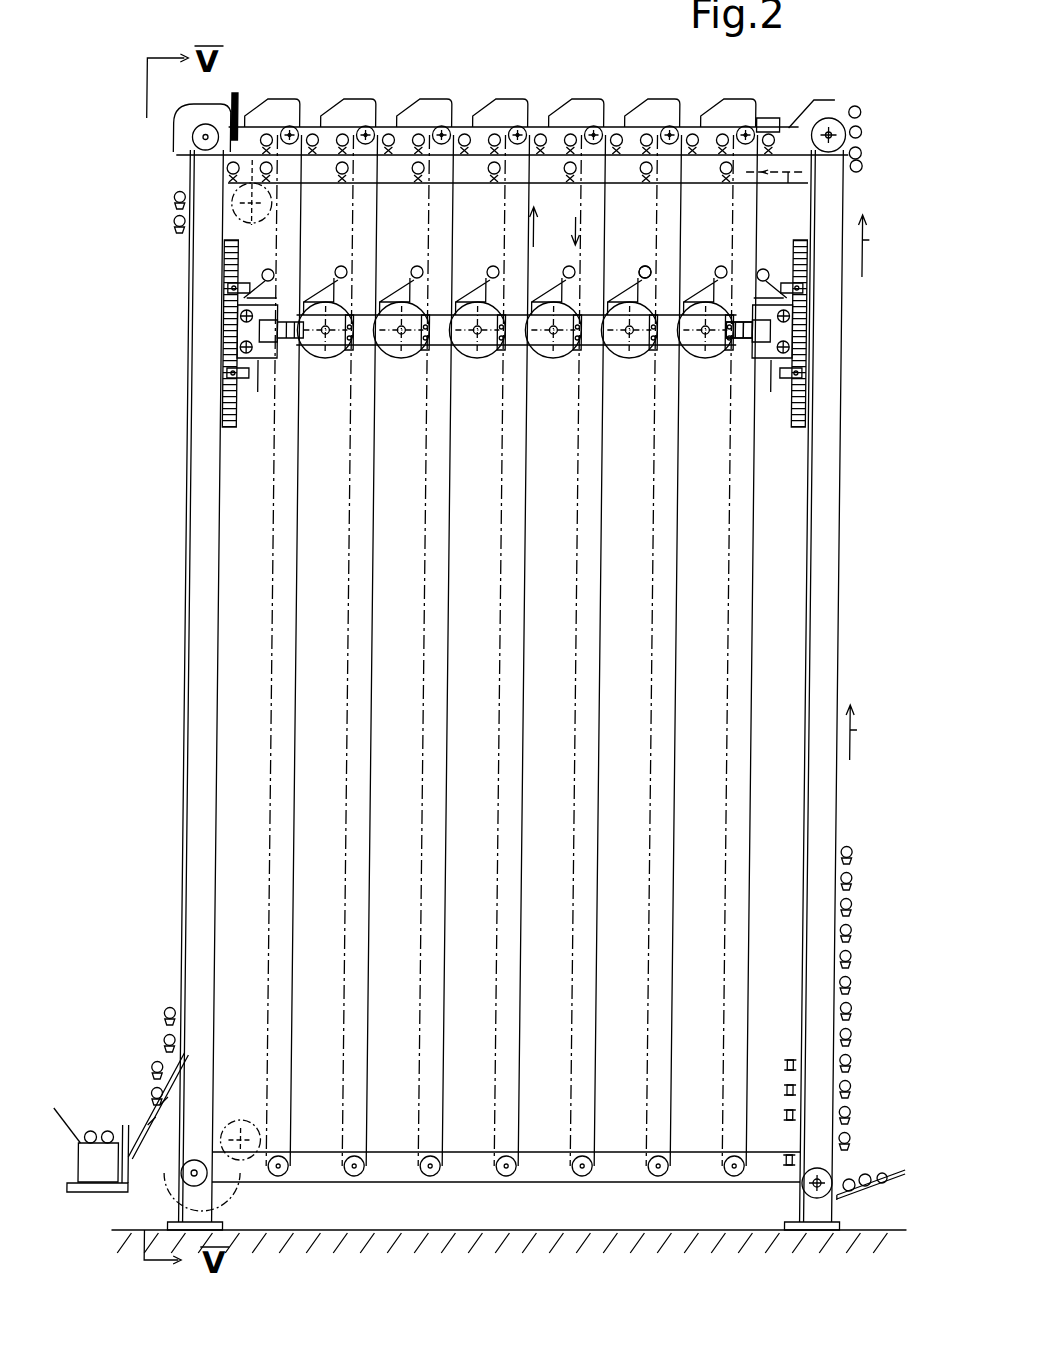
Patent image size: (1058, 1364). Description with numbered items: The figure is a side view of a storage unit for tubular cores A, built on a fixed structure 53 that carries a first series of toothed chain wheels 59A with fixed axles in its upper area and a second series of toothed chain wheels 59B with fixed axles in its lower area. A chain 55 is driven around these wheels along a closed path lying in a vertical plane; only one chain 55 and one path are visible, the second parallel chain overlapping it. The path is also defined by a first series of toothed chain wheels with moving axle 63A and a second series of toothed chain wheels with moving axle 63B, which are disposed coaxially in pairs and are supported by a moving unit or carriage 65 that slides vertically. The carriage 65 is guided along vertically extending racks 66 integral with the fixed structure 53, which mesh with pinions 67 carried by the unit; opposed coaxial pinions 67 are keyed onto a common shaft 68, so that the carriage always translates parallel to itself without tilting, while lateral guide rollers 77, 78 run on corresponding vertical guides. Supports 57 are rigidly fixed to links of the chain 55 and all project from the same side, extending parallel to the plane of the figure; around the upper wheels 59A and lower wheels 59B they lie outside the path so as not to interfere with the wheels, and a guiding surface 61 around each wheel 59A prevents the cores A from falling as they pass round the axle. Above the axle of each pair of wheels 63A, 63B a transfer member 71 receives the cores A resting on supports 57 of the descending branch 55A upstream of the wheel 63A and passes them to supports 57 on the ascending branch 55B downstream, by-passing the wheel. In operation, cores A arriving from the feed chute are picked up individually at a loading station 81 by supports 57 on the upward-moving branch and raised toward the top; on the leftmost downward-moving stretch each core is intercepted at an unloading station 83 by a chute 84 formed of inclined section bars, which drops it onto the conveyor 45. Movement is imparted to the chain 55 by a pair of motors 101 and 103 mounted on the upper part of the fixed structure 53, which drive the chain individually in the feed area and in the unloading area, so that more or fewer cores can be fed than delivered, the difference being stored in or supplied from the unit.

The fixed structure 53 is at (200, 518).
The chain 55 is at (838, 830).
The descending branch of the chain 55A is at (354, 222).
The ascending branch of the chain 55B is at (412, 228).
The upper toothed chain wheels with fixed axle 59A is at (592, 124).
The lower toothed chain wheels with fixed axle 59B is at (598, 1168).
The guiding surface 61 is at (358, 108).
The toothed chain wheels with moving axle of the first series 63A is at (335, 349).
The toothed chain wheels with moving axle of the second series 63B is at (539, 330).
The moving unit or carriage 65 is at (596, 342).
The racks 66 is at (228, 412).
The pinions 67 is at (241, 330).
The common shaft 68 is at (742, 356).
The exchange or transfer member 71 is at (410, 290).
The lateral guide roller 77 is at (231, 288).
The lateral guide roller 78 is at (268, 283).
The loading station 81 is at (872, 1144).
The unloading station 83 is at (116, 1097).
The chute 84 is at (158, 1125).
The conveyor 45 is at (107, 1197).
The supports 57 is at (860, 1058).
The motor 101 is at (790, 185).
The motor 103 is at (267, 108).
The cores A is at (842, 112).